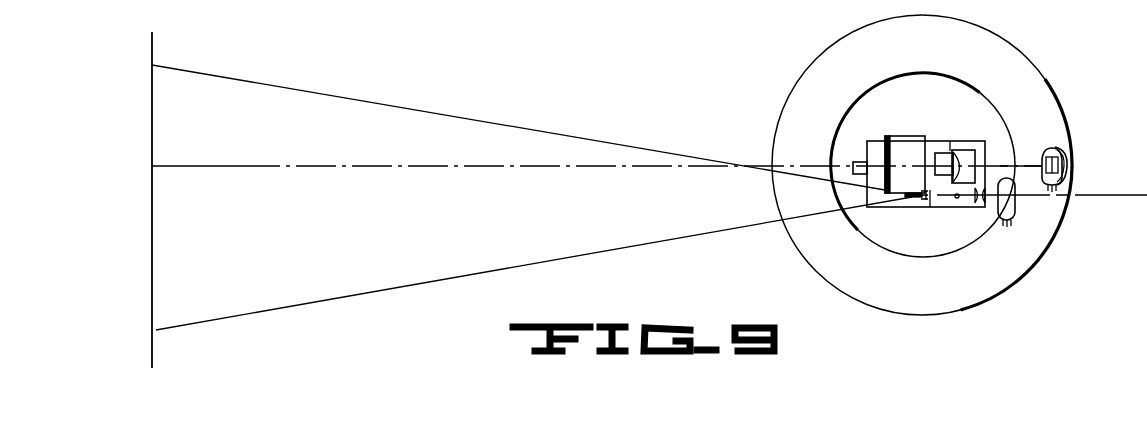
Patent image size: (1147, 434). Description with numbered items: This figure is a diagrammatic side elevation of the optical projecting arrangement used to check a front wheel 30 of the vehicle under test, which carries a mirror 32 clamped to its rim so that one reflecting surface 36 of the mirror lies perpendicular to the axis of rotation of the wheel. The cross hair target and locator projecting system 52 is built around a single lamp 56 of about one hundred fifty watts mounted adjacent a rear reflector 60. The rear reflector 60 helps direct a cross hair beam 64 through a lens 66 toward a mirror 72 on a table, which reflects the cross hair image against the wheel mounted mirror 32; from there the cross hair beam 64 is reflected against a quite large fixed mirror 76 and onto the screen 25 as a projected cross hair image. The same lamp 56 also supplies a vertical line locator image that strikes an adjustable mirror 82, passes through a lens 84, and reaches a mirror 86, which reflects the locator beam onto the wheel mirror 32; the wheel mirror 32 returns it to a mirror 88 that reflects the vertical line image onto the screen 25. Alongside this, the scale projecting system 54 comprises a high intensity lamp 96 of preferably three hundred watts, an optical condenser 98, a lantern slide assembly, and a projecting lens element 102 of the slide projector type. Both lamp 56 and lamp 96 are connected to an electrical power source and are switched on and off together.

The screen 25 is at (153, 228).
The front wheel 30 is at (1000, 42).
The mirror 32 is at (880, 208).
The reflecting surface 36 is at (935, 208).
The cross hair target and locator projecting system 52 is at (1066, 137).
The scale projecting system 54 is at (1052, 203).
The lamp 56 is at (1064, 150).
The rear reflector 60 is at (1063, 165).
The cross hair beam 64 is at (486, 167).
The lens 66 is at (1031, 166).
The mirror 72 is at (943, 176).
The mirror 76 is at (898, 138).
The adjustable mirror 82 is at (1063, 178).
The lens 84 is at (958, 160).
The mirror 86 is at (853, 163).
The mirror 88 is at (977, 156).
The lamp 96 is at (1015, 212).
The optical condenser 98 is at (978, 208).
The projecting lens element 102 is at (933, 206).